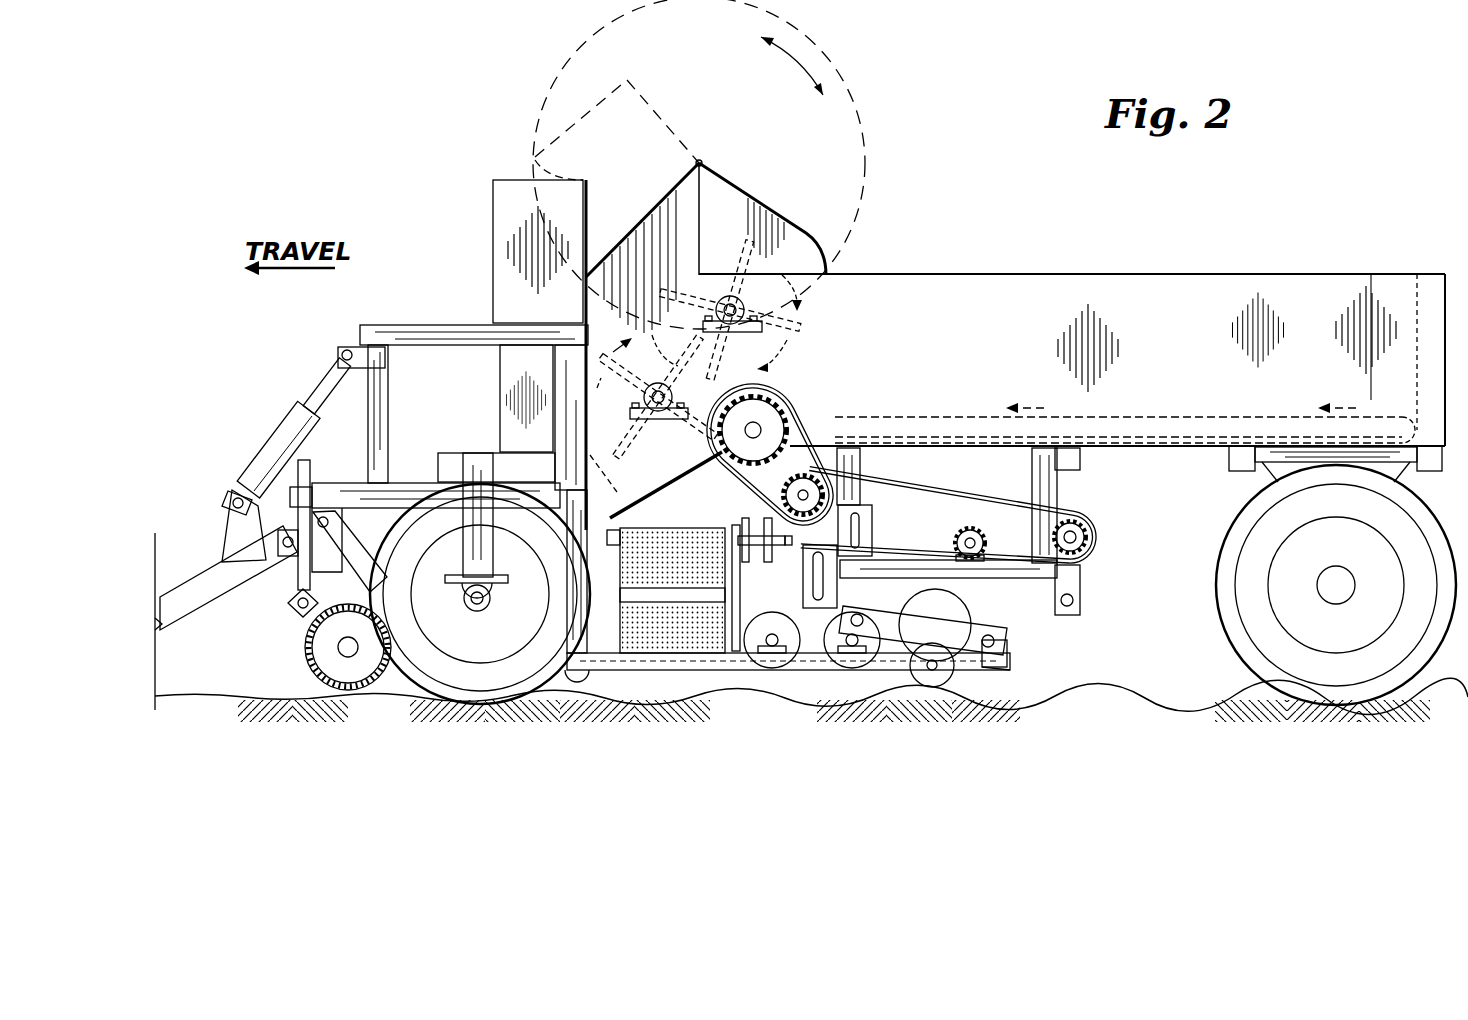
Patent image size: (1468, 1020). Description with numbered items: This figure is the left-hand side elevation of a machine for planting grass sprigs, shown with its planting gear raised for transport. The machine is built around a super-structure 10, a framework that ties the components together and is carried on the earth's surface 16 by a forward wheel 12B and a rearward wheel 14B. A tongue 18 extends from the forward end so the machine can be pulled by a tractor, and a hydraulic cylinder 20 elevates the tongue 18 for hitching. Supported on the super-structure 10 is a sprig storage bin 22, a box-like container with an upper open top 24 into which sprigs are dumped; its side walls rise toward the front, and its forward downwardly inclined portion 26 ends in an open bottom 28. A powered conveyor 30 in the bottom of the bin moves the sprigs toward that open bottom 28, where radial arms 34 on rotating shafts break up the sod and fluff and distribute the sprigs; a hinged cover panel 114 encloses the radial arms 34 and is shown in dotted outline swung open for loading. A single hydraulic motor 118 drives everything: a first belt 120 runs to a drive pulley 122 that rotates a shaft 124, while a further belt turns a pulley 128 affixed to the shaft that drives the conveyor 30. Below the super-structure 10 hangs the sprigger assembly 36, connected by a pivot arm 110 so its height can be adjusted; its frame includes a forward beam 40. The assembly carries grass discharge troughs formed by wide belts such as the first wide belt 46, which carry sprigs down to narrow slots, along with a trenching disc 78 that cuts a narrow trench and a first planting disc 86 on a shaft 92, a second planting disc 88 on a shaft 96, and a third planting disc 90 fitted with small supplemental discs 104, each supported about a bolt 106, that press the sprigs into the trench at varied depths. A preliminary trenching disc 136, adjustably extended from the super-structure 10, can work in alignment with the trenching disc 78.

The super-structure 10 is at (462, 254).
The cover panel 114 is at (584, 116).
The sprig storage bin 22 is at (1027, 300).
The upper open top 24 is at (952, 275).
The conveyor 30 is at (1125, 410).
The radial arms 34 is at (694, 307).
The downwardly inclined portion 26 is at (667, 482).
The open bottom 28 is at (672, 484).
The pulley 128 is at (760, 415).
The bolt 106 is at (794, 448).
The drive pulley 122 is at (815, 478).
The first belt 120 is at (957, 490).
The shaft 124 is at (863, 497).
The hydraulic motor 118 is at (1092, 520).
The pivot arm 110 is at (948, 627).
The sprigger assembly 36 is at (1032, 643).
The forward beam 40 is at (1000, 667).
The earth's surface 16 is at (1165, 697).
The rearward wheel 14B is at (1350, 672).
The hydraulic cylinder 20 is at (278, 437).
The tongue 18 is at (205, 582).
The preliminary trenching disc 136 is at (302, 663).
The forward wheel 12B is at (466, 683).
The trenching disc 78 is at (581, 682).
The first wide belt 46 is at (675, 640).
The shaft 92 is at (768, 650).
The first planting disc 86 is at (773, 670).
The shaft 96 is at (850, 650).
The second planting disc 88 is at (856, 672).
The supplemental disc 104 is at (930, 673).
The third planting disc 90 is at (952, 660).